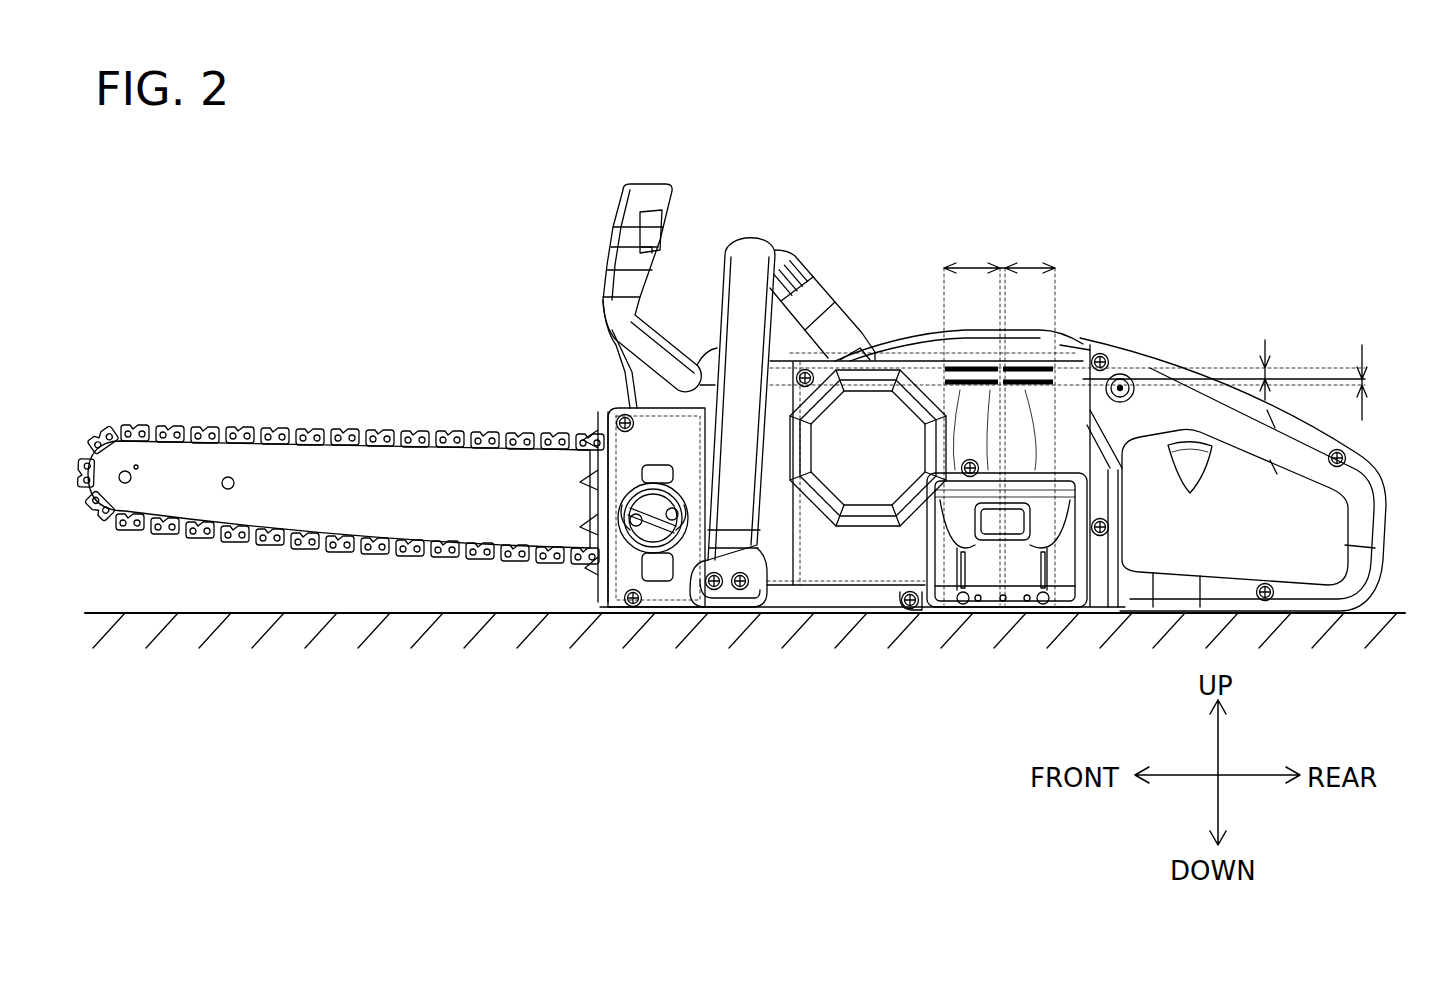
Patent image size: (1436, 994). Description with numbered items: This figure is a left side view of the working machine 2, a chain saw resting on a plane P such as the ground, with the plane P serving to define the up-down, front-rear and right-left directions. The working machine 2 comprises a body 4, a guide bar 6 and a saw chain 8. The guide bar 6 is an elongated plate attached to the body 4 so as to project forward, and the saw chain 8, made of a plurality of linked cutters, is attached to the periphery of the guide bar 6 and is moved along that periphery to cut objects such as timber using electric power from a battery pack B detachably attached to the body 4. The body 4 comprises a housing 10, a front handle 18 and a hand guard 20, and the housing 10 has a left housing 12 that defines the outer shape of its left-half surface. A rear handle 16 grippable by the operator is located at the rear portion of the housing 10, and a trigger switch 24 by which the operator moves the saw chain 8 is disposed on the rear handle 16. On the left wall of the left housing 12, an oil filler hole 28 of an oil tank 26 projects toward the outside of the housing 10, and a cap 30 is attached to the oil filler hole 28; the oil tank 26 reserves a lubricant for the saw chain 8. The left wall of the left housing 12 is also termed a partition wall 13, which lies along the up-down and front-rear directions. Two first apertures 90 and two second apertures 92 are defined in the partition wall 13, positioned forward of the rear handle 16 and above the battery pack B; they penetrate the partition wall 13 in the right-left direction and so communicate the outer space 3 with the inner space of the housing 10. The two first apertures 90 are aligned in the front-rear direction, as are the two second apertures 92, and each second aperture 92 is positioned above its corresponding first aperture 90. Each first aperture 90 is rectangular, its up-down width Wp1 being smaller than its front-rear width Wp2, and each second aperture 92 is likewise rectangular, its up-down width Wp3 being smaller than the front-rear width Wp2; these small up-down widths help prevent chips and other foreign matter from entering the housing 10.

The working machine 2 is at (476, 173).
The outer space 3 is at (1124, 296).
The body 4 is at (833, 641).
The guide bar 6 is at (175, 450).
The saw chain 8 is at (272, 425).
The housing 10 is at (882, 614).
The left housing 12 is at (802, 603).
The partition wall 13 is at (1108, 604).
The rear handle 16 is at (1352, 587).
The front handle 18 is at (753, 248).
The hand guard 20 is at (632, 206).
The trigger switch 24 is at (1197, 450).
The oil tank 26 is at (648, 605).
The oil filler hole 28 is at (596, 615).
The cap 30 is at (638, 608).
The first apertures 90 is at (1004, 603).
The second apertures 92 is at (960, 603).
The battery pack B is at (1060, 604).
The plane P is at (148, 610).
The width of the first aperture in the up-down direction Wp1 is at (1102, 382).
The width of the aperture in the front-rear direction Wp2 is at (1000, 418).
The width of the second aperture in the up-down direction Wp3 is at (1067, 370).